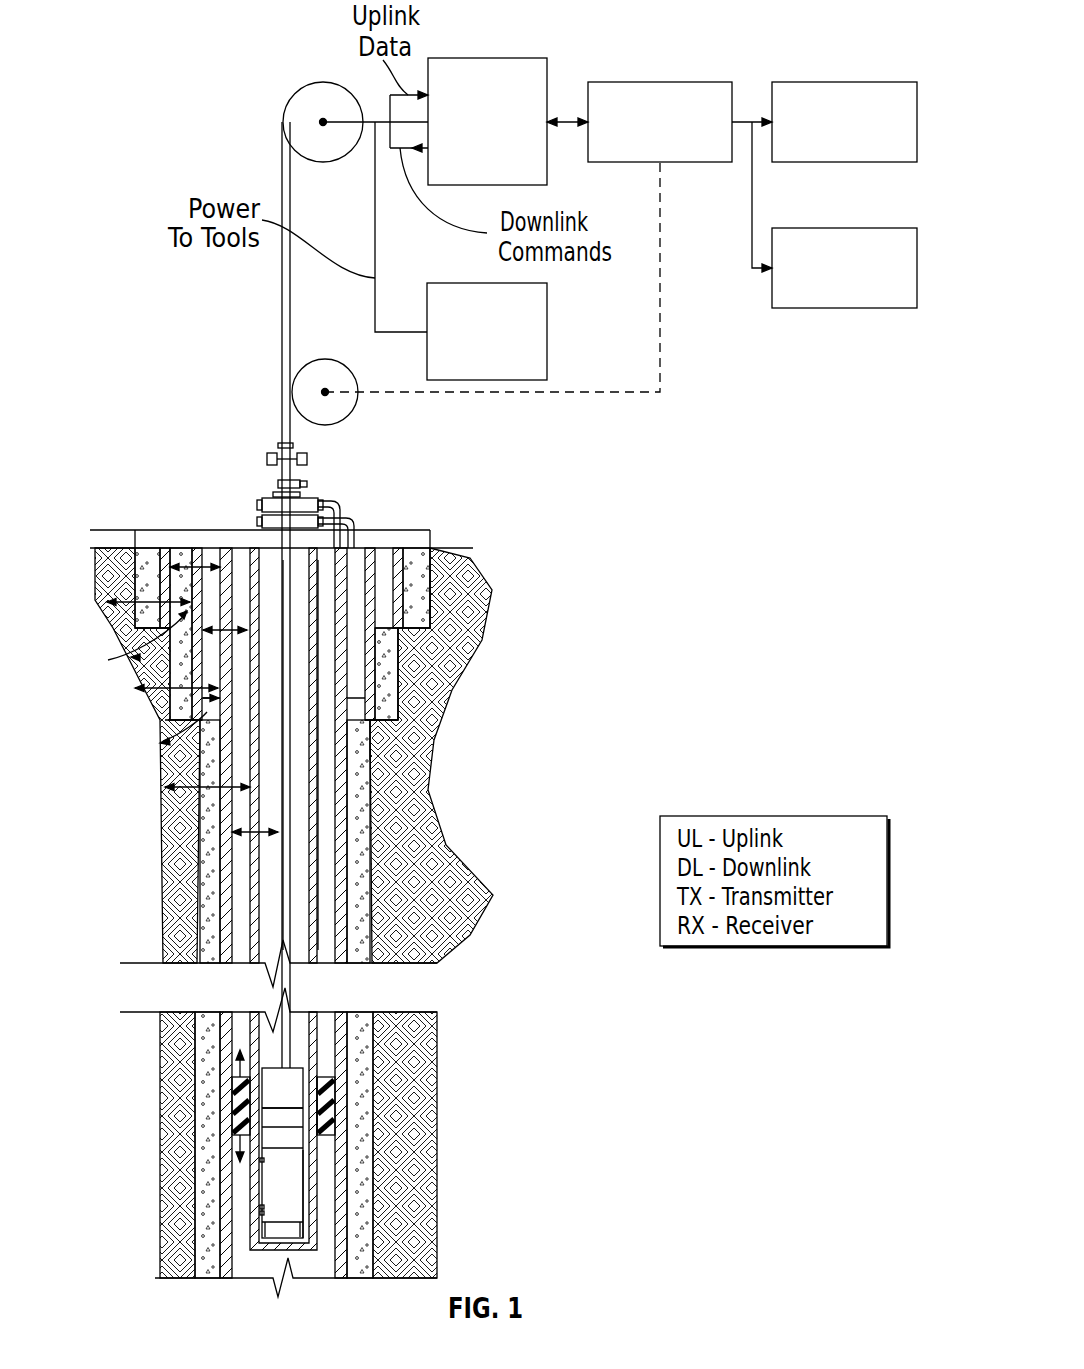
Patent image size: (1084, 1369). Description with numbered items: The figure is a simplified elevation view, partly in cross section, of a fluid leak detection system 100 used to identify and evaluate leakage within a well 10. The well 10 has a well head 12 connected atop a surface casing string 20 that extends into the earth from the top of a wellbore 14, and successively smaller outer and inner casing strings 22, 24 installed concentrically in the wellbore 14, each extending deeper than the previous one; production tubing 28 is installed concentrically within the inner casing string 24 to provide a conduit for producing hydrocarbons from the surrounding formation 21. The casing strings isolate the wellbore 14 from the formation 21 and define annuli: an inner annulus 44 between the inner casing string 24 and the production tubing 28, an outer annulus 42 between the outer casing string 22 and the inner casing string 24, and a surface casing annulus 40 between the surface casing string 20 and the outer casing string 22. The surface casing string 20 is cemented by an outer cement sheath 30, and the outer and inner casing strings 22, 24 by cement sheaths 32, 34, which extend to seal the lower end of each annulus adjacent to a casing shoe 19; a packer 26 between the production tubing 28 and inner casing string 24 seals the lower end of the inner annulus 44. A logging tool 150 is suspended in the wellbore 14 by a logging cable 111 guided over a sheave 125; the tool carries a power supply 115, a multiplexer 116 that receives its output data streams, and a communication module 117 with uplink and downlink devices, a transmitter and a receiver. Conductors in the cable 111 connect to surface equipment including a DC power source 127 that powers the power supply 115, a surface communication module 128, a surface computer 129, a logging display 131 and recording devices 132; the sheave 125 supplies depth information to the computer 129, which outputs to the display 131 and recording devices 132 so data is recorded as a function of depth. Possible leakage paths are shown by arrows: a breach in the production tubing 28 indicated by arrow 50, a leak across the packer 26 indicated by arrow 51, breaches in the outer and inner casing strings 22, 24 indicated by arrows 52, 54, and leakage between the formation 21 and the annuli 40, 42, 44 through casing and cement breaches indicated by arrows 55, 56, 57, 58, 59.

The fluid leak detection system 100 is at (203, 64).
The well 10 is at (628, 530).
The well head 12 is at (302, 489).
The wellbore 14 is at (434, 598).
The casing shoe 19 is at (378, 672).
The surface casing string 20 is at (405, 565).
The formation 21 is at (451, 915).
The outer casing string 22 is at (440, 650).
The inner casing string 24 is at (347, 827).
The packer 26 is at (323, 80).
The production tubing 28 is at (330, 910).
The outer cement sheath 30 is at (435, 575).
The cement sheath 32 is at (400, 683).
The cement sheath 34 is at (370, 862).
The surface casing annulus 40 is at (387, 558).
The outer annulus 42 is at (358, 558).
The inner annulus 44 is at (322, 797).
The arrow 50 is at (250, 833).
The arrow 51 is at (237, 1072).
The arrow 52 is at (170, 567).
The arrow 54 is at (242, 627).
The arrow 55 is at (140, 602).
The arrow 56 is at (133, 643).
The arrow 57 is at (215, 697).
The arrow 58 is at (162, 742).
The arrow 59 is at (213, 787).
The logging cable 111 is at (287, 777).
The power supply 115 is at (304, 1113).
The multiplexer 116 is at (322, 1087).
The communication module 117 is at (297, 1068).
The sheave 125 is at (323, 427).
The DC power source 127 is at (453, 282).
The surface communication module 128 is at (508, 58).
The surface computer 129 is at (690, 80).
The logging display 131 is at (863, 227).
The recording devices 132 is at (863, 80).
The logging tool 150 is at (306, 1208).